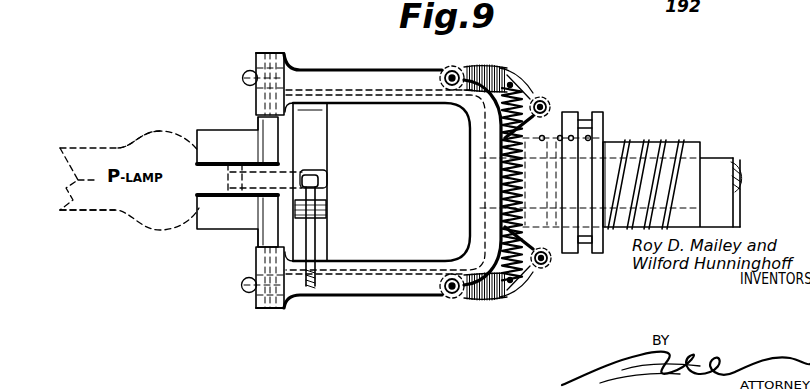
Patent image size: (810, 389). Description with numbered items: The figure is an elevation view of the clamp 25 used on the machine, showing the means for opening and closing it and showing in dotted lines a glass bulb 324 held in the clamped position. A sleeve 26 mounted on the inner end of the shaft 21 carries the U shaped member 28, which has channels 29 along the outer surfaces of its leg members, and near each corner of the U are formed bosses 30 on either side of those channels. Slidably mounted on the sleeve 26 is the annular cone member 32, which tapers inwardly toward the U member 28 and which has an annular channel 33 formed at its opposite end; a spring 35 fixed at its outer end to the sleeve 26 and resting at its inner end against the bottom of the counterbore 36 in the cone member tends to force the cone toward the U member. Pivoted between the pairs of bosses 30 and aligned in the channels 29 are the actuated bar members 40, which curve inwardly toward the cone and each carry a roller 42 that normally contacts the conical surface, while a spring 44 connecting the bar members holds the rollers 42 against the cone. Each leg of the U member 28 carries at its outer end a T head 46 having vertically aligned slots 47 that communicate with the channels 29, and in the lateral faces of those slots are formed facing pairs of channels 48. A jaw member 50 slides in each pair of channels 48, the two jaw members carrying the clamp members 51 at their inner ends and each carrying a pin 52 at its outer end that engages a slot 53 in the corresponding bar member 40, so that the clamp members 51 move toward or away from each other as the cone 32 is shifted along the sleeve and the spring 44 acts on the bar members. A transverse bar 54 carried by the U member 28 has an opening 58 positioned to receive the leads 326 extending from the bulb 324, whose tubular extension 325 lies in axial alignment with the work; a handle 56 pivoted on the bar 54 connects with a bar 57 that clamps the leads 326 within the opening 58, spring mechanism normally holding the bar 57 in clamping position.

The shaft 21 is at (722, 198).
The clamp 25 is at (381, 182).
The sleeve 26 is at (703, 148).
The U shaped member 28 is at (400, 76).
The channels 29 is at (322, 96).
The bosses 30 is at (462, 68).
The annular cone member 32 is at (567, 113).
The annular channel 33 is at (595, 114).
The spring 35 is at (646, 142).
The counterbore 36 is at (584, 245).
The actuated bar members 40 is at (364, 68).
The roller 42 is at (544, 98).
The spring 44 is at (512, 84).
The T head 46 is at (258, 60).
The slots 47 is at (268, 52).
The channels 48 is at (276, 56).
The jaw member 50 is at (262, 124).
The clamp members 51 is at (203, 150).
The pin 52 is at (250, 66).
The slot 53 is at (245, 78).
The transverse bar 54 is at (329, 152).
The handle 56 is at (312, 237).
The bar 57 is at (318, 186).
The opening 58 is at (313, 162).
The glass bulb 324 is at (147, 137).
The tubular extension 325 is at (94, 210).
The leads 326 is at (322, 182).